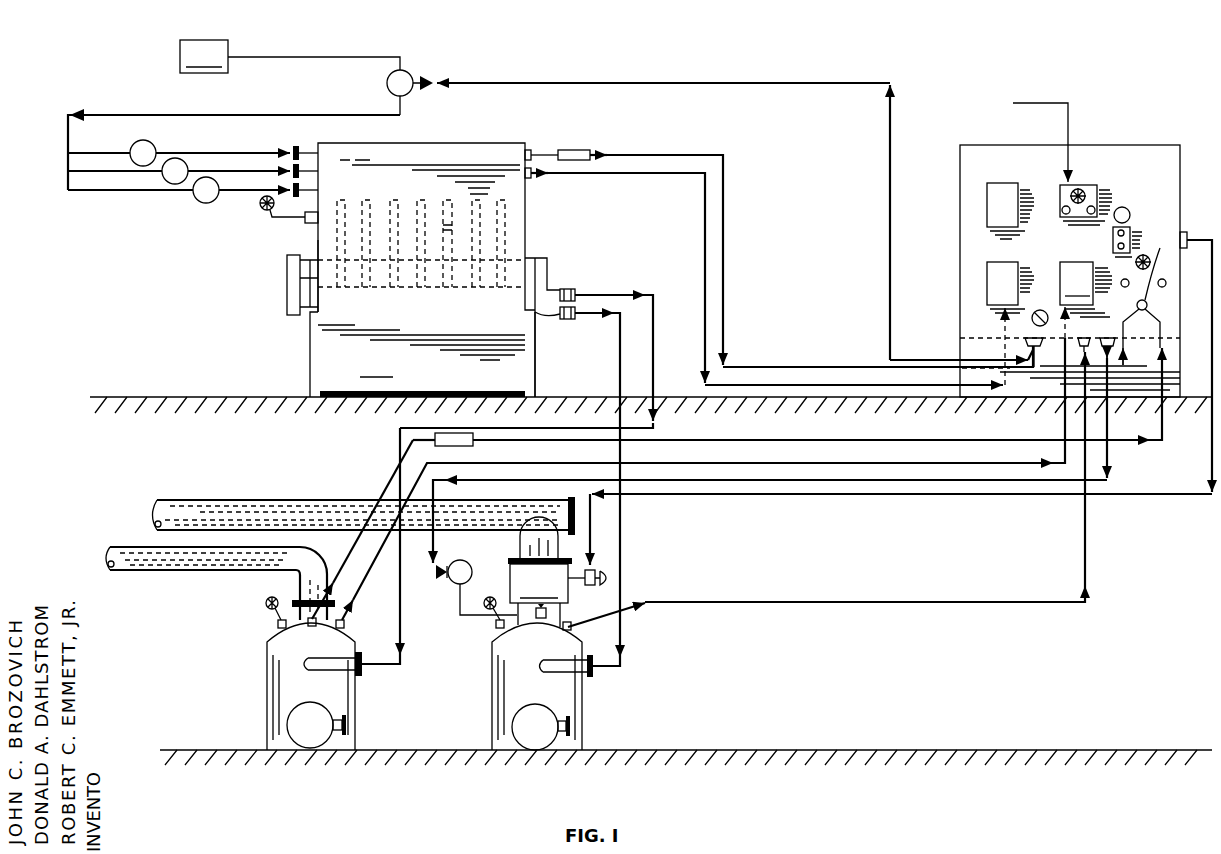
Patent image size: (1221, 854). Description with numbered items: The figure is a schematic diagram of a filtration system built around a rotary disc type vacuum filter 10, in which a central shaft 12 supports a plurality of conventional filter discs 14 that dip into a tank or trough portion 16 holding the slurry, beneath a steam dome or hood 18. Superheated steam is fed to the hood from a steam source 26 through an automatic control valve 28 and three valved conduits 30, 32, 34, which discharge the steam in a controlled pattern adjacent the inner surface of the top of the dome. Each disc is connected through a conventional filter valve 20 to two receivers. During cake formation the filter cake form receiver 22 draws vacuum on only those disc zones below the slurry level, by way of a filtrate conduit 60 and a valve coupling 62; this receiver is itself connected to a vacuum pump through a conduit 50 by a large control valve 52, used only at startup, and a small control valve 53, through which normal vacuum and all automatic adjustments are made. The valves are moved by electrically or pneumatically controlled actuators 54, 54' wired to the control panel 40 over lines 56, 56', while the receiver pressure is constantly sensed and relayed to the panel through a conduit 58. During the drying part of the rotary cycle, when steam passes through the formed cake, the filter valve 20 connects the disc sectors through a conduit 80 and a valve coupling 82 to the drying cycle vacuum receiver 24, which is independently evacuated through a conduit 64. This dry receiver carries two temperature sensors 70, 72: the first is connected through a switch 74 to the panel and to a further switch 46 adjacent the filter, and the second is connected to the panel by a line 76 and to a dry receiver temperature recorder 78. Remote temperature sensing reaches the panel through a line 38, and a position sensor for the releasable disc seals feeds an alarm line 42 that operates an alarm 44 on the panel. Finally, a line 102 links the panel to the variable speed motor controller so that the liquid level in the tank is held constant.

The rotary disc type vacuum filter 10 is at (268, 284).
The central shaft 12 is at (320, 262).
The filter discs 14 is at (513, 223).
The tank or trough portion 16 is at (422, 354).
The steam dome or hood 18 is at (465, 143).
The filter valve 20 is at (548, 283).
The filter cake form receiver 22 is at (565, 703).
The drying cycle vacuum receiver 24 is at (333, 698).
The source of superheated steam 26 is at (290, 56).
The automatic control valve 28 is at (412, 73).
The valved conduit 30 is at (95, 190).
The valved conduit 32 is at (118, 171).
The valved conduit 34 is at (90, 153).
The remote temperature sensing line 38 is at (635, 175).
The control panel 40 is at (958, 232).
The alarm line 42 is at (635, 155).
The alarm 44 is at (1154, 261).
The switch 46 is at (570, 150).
The conduit 50 is at (302, 500).
The large control valve 52 is at (540, 592).
The small control valve 53 is at (466, 562).
The actuator 54 is at (618, 539).
The actuator 54' is at (427, 548).
The line 56 is at (902, 388).
The line 56' is at (776, 437).
The conduit 58 is at (690, 603).
The filtrate conduit 60 is at (618, 350).
The valve coupling 62 is at (565, 320).
The conduit 64 is at (188, 572).
The temperature sensor 70 is at (309, 628).
The temperature sensor 72 is at (346, 625).
The switch 74 is at (462, 448).
The line 76 is at (378, 556).
The dry receiver temperature recorder 78 is at (1086, 300).
The conduit 80 is at (405, 640).
The valve coupling 82 is at (575, 289).
The line 102 is at (1062, 143).